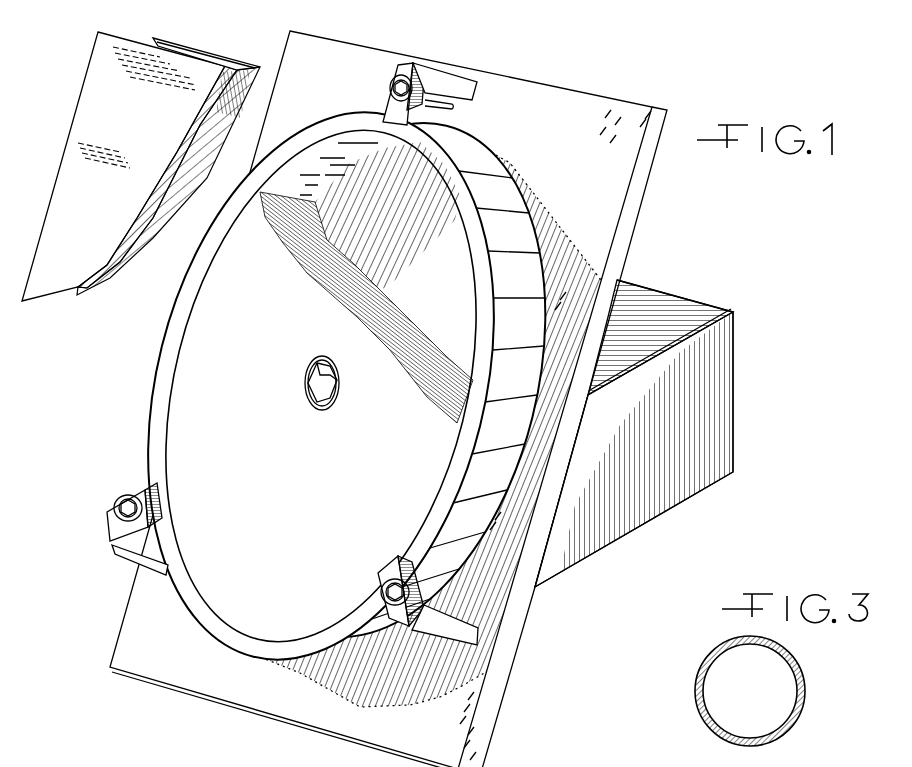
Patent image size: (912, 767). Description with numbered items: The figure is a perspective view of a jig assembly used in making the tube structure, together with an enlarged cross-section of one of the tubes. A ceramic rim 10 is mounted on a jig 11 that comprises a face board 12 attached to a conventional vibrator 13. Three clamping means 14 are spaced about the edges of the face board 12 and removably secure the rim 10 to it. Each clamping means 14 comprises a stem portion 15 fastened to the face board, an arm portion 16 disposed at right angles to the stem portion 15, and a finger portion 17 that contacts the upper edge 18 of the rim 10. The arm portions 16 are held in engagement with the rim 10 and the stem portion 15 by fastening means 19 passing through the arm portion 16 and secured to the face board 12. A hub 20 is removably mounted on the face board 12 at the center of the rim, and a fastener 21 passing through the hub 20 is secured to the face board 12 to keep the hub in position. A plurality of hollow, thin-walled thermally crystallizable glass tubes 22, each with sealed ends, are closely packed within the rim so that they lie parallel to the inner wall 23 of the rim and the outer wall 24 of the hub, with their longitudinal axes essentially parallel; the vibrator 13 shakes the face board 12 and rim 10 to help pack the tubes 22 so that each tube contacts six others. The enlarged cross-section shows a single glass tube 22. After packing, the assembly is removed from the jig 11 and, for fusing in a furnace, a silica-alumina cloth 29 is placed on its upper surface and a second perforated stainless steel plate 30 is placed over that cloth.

In FIG. 1, the ceramic rim 10 is at (344, 386).
In FIG. 1, the jig 11 is at (634, 437).
In FIG. 1, the face board 12 is at (603, 108).
In FIG. 1, the vibrator 13 is at (722, 453).
In FIG. 1, the clamping means 14 is at (399, 72).
In FIG. 1, the stem portion 15 is at (462, 78).
In FIG. 1, the arm portion 16 is at (392, 108).
In FIG. 1, the finger portion 17 is at (375, 119).
In FIG. 1, the upper edge 18 is at (448, 471).
In FIG. 1, the fastening means 19 is at (403, 72).
In FIG. 1, the hub 20 is at (314, 378).
In FIG. 1, the fastener 21 is at (313, 381).
In FIG. 1, the glass tube 22 is at (327, 245).
In FIG. 3, the glass tube 22 is at (715, 691).
In FIG. 1, the inner wall 23 is at (312, 170).
In FIG. 1, the outer wall 24 is at (340, 395).
In FIG. 1, the silica-alumina cloth 29 is at (203, 46).
In FIG. 1, the perforated stainless steel plate 30 is at (98, 42).